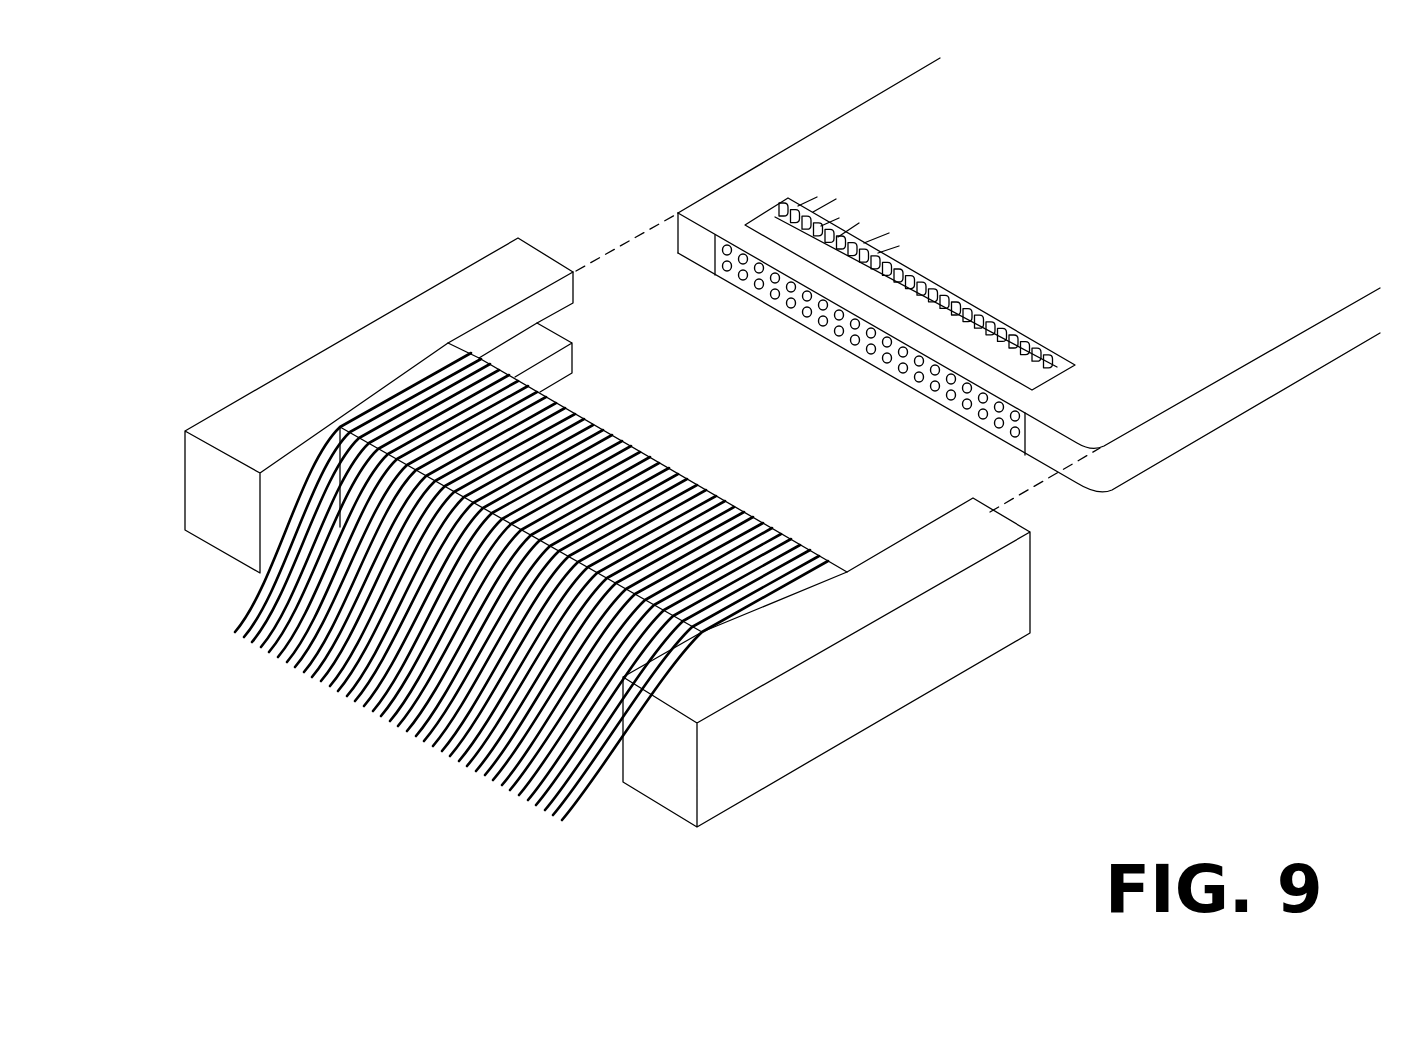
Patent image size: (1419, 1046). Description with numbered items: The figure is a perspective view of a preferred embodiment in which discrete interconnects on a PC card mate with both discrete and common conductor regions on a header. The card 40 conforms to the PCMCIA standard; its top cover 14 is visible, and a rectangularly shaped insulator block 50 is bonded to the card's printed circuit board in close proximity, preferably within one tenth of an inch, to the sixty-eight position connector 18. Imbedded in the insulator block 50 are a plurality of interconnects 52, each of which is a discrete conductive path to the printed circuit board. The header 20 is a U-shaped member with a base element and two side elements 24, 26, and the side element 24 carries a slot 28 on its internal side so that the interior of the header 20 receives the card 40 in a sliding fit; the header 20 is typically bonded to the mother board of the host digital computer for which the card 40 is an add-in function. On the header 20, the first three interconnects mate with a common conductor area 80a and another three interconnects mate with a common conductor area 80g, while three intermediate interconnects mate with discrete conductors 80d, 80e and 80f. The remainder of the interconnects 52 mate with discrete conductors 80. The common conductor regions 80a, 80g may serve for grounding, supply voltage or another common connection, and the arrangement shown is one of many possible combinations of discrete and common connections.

The top cover 14 is at (882, 119).
The 68 position connector 18 is at (712, 250).
The insulator block 50 is at (762, 212).
The interconnects 52 is at (1110, 370).
The card 40 is at (1257, 426).
The side element 24 is at (458, 263).
The slot 28 is at (538, 335).
The header 20 is at (838, 770).
The side element 26 is at (977, 642).
The discrete conductors 80 is at (503, 608).
The common conductor area 80a is at (527, 383).
The discrete conductor 80d is at (570, 405).
The discrete conductor 80e is at (585, 425).
The discrete conductor 80f is at (610, 445).
The common conductor area 80g is at (630, 470).